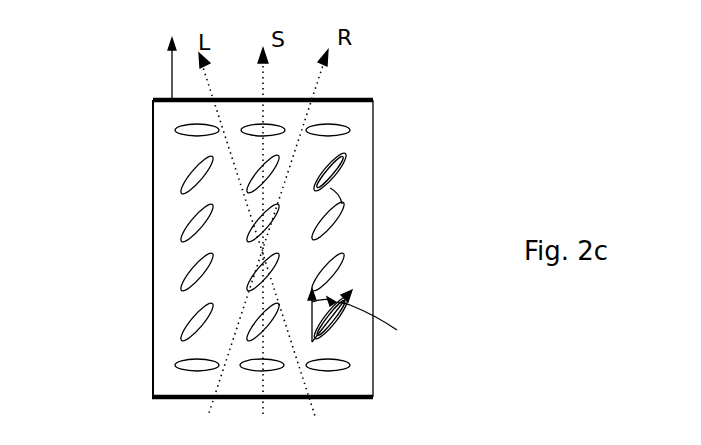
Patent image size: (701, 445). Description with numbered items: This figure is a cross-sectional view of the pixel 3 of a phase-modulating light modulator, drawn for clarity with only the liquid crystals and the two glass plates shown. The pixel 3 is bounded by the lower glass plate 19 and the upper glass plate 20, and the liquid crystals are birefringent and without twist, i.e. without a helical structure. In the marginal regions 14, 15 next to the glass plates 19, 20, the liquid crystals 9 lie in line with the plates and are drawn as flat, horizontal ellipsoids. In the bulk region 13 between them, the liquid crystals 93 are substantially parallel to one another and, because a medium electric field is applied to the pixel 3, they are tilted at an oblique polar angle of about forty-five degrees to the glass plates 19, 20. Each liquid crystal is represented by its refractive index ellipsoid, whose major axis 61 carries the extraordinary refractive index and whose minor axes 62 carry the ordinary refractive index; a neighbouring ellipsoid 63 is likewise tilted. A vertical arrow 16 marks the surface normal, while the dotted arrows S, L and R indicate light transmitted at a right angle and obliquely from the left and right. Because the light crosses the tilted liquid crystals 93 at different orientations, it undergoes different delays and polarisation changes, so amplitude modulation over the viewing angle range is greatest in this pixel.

The pixel 3 is at (137, 128).
The liquid crystals 9 is at (175, 130).
The bulk region 13 is at (338, 287).
The marginal region 14 is at (100, 126).
The marginal region 15 is at (131, 383).
The normal direction arrow 16 is at (172, 80).
The lower glass plate 19 is at (374, 99).
The upper glass plate 20 is at (374, 398).
The major axis 61 is at (317, 190).
The minor axes 62 is at (346, 166).
The adjacent lens element 63 is at (343, 205).
The liquid crystals 93 is at (372, 212).